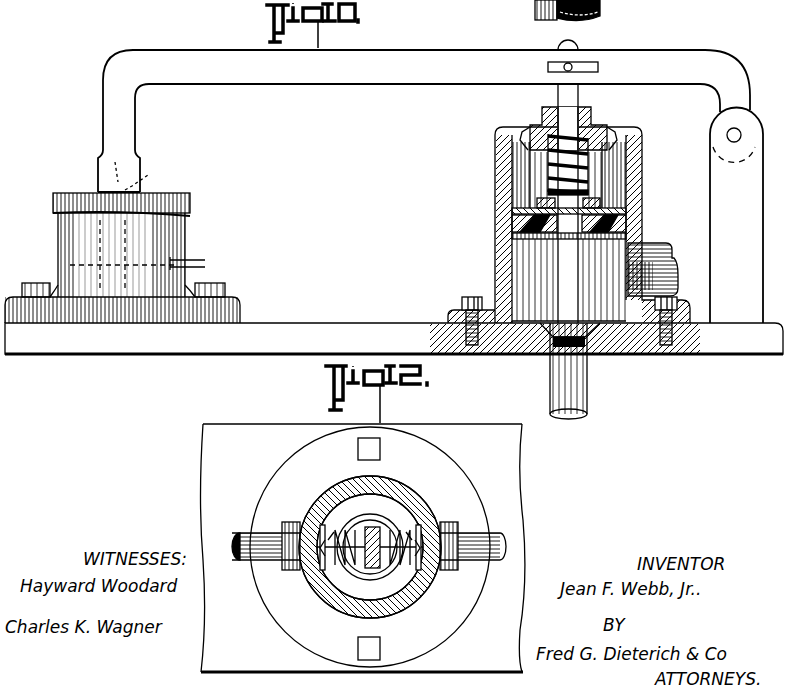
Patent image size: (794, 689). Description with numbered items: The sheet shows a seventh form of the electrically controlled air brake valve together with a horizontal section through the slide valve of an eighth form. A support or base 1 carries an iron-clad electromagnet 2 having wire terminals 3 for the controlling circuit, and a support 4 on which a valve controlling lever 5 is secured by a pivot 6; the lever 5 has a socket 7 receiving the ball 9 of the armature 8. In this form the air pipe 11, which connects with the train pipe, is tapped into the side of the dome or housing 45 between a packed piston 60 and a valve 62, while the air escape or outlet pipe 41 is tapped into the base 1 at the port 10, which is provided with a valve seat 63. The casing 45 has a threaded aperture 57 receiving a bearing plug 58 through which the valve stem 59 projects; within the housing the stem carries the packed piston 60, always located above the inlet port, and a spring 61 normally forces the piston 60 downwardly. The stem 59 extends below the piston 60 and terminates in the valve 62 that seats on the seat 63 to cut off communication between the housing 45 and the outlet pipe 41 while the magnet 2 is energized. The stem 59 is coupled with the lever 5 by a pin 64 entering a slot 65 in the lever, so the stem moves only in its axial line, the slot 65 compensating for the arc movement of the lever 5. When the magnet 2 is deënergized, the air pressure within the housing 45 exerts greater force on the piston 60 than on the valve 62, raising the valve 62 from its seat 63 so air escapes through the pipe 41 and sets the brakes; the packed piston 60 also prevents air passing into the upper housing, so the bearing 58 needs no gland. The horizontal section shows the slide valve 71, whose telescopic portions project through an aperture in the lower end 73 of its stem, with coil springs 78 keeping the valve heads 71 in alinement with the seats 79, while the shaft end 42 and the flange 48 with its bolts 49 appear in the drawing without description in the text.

In FIG. 10, the support or base 1 is at (394, 338).
In FIG. 12, the support or base 1 is at (363, 548).
In FIG. 10, the iron-clad electromagnet 2 is at (122, 268).
In FIG. 10, the wire terminals 3 is at (189, 254).
In FIG. 10, the support 4 is at (736, 216).
In FIG. 10, the valve controlling lever 5 is at (424, 121).
In FIG. 10, the pivot 6 is at (731, 142).
In FIG. 10, the socket 7 is at (115, 162).
In FIG. 10, the armature 8 is at (64, 196).
In FIG. 10, the ball 9 is at (144, 177).
In FIG. 10, the port 10 is at (537, 12).
In FIG. 12, the port 10 is at (352, 582).
In FIG. 10, the air pipe 11 is at (662, 250).
In FIG. 12, the air pipe 11 is at (388, 584).
In FIG. 10, the air escape or outlet pipe 41 is at (550, 390).
In FIG. 12, the air escape or outlet pipe 41 is at (484, 538).
In FIG. 12, the shaft end 42 is at (238, 532).
In FIG. 10, the dome or housing 45 is at (644, 178).
In FIG. 12, the dome or housing 45 is at (384, 500).
In FIG. 10, the flange 48 is at (456, 310).
In FIG. 12, the flange 48 is at (320, 492).
In FIG. 10, the bolt 49 is at (470, 297).
In FIG. 12, the bolt 49 is at (358, 451).
In FIG. 10, the threaded aperture 57 is at (534, 134).
In FIG. 10, the bearing plug 58 is at (596, 125).
In FIG. 10, the valve stem 59 is at (612, 140).
In FIG. 10, the packed piston 60 is at (548, 210).
In FIG. 10, the spring 61 is at (548, 172).
In FIG. 10, the valve 62 is at (580, 345).
In FIG. 10, the valve seat 63 is at (590, 330).
In FIG. 10, the pin 64 is at (572, 62).
In FIG. 10, the slot 65 is at (598, 68).
In FIG. 12, the slide valve 71 is at (328, 556).
In FIG. 12, the lower end of valve stem 73 is at (370, 566).
In FIG. 12, the coil springs 78 is at (398, 532).
In FIG. 12, the seats 79 is at (421, 533).